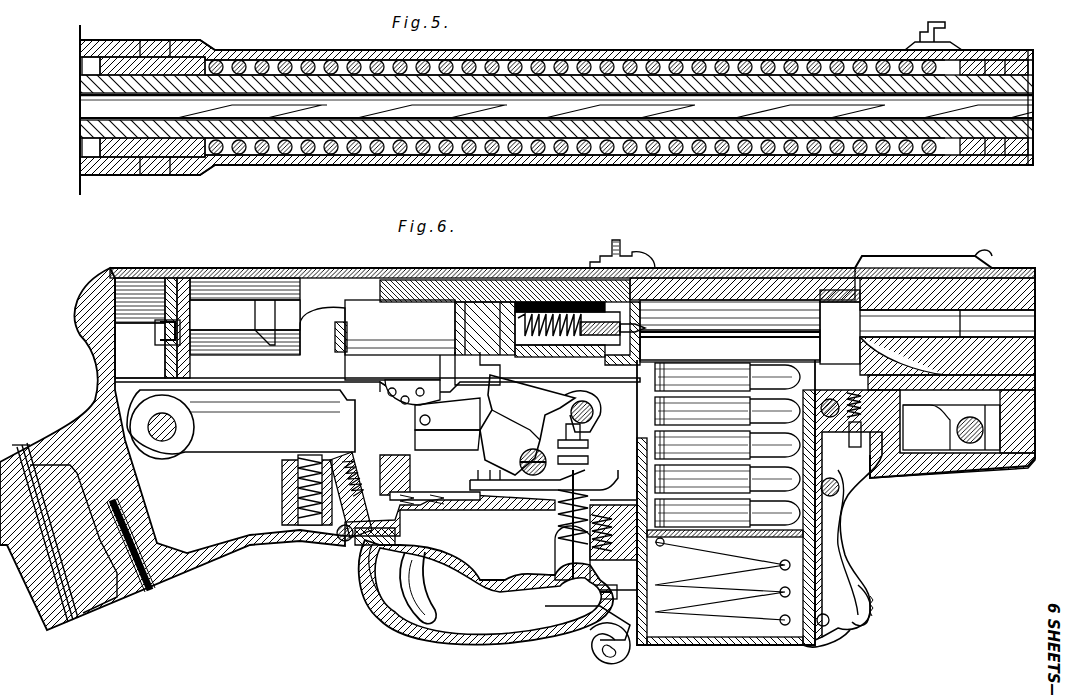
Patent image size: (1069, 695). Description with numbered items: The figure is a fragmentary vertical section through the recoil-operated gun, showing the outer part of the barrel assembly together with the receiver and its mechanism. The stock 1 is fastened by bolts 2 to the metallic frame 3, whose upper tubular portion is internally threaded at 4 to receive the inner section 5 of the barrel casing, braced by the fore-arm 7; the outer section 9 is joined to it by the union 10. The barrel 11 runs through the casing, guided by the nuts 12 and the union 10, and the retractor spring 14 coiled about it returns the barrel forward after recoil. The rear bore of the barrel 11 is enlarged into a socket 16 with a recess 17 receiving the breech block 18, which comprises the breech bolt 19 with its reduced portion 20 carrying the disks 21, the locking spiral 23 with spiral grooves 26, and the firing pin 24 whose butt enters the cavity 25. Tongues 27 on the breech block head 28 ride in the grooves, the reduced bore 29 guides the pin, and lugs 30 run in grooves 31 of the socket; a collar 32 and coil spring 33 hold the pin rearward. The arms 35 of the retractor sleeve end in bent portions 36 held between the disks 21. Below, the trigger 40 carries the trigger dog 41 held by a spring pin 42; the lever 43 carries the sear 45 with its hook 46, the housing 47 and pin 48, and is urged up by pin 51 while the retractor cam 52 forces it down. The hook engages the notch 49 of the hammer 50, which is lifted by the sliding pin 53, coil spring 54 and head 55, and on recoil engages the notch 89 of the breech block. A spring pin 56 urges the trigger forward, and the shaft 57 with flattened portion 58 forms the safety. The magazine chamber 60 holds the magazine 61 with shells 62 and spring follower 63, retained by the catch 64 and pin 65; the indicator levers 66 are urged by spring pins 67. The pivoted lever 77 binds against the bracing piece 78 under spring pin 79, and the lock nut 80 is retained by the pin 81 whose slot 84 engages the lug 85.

In FIG. 6, the stock 1 is at (108, 606).
In FIG. 6, the bolts 2 is at (17, 470).
In FIG. 6, the frame 3 is at (78, 420).
In FIG. 6, the internally threaded outer end 4 is at (905, 262).
In FIG. 6, the inner section of barrel casing 5 is at (1010, 268).
In FIG. 6, the fore-arm 7 is at (1025, 468).
In FIG. 5, the outer section of barrel casing 9 is at (698, 60).
In FIG. 5, the union 10 is at (113, 66).
In FIG. 5, the barrel 11 is at (782, 80).
In FIG. 5, the nuts 12 is at (992, 160).
In FIG. 5, the retractor spring 14 is at (598, 62).
In FIG. 6, the socket 16 is at (712, 300).
In FIG. 6, the recess 17 is at (845, 300).
In FIG. 6, the breech block 18 is at (392, 320).
In FIG. 6, the breech bolt 19 is at (280, 320).
In FIG. 6, the reduced rear portion 20 is at (175, 355).
In FIG. 6, the disks 21 is at (160, 300).
In FIG. 6, the breech block locking spiral 23 is at (478, 302).
In FIG. 6, the firing pin 24 is at (604, 324).
In FIG. 6, the cavity 25 is at (325, 310).
In FIG. 6, the spiral grooves 26 is at (502, 300).
In FIG. 6, the tongues 27 is at (555, 312).
In FIG. 6, the breech block head 28 is at (622, 268).
In FIG. 6, the reduced bore portion 29 is at (645, 300).
In FIG. 6, the lugs 30 is at (660, 330).
In FIG. 6, the grooves 31 is at (745, 318).
In FIG. 6, the collar 32 is at (520, 305).
In FIG. 6, the coil spring 33 is at (586, 322).
In FIG. 6, the arms 35 is at (248, 280).
In FIG. 6, the inwardly bent ends 36 is at (195, 300).
In FIG. 6, the trigger 40 is at (428, 577).
In FIG. 6, the trigger dog 41 is at (351, 487).
In FIG. 6, the spring forced pin 42 is at (440, 522).
In FIG. 6, the lever 43 is at (230, 452).
In FIG. 6, the sear 45 is at (440, 428).
In FIG. 6, the hook 46 is at (440, 450).
In FIG. 6, the housing 47 is at (392, 406).
In FIG. 6, the spring forced pin 48 is at (400, 456).
In FIG. 6, the notch 49 is at (527, 425).
In FIG. 6, the hammer 50 is at (516, 425).
In FIG. 6, the spring forced pin 51 is at (285, 485).
In FIG. 6, the retractor cam 52 is at (382, 388).
In FIG. 6, the sliding pin 53 is at (545, 592).
In FIG. 6, the coil spring 54 is at (590, 540).
In FIG. 6, the head 55 is at (576, 418).
In FIG. 6, the spring forced pin 56 is at (545, 532).
In FIG. 6, the shaft 57 is at (365, 545).
In FIG. 6, the flattened portion 58 is at (378, 570).
In FIG. 6, the magazine chamber 60 is at (836, 522).
In FIG. 6, the magazine 61 is at (840, 548).
In FIG. 6, the shells 62 is at (726, 502).
In FIG. 6, the spring follower 63 is at (725, 591).
In FIG. 6, the catch 64 is at (620, 650).
In FIG. 6, the spring forced pin 65 is at (582, 608).
In FIG. 6, the levers 66 is at (538, 490).
In FIG. 6, the spring forced pins 67 is at (720, 512).
In FIG. 6, the pivoted lever 77 is at (866, 582).
In FIG. 6, the bracing piece 78 is at (920, 470).
In FIG. 6, the spring forced pin 79 is at (951, 427).
In FIG. 6, the lock nut 80 is at (970, 258).
In FIG. 6, the pin 81 is at (972, 455).
In FIG. 6, the slot 84 is at (957, 434).
In FIG. 6, the lug 85 is at (997, 456).
In FIG. 6, the notch 89 is at (465, 352).